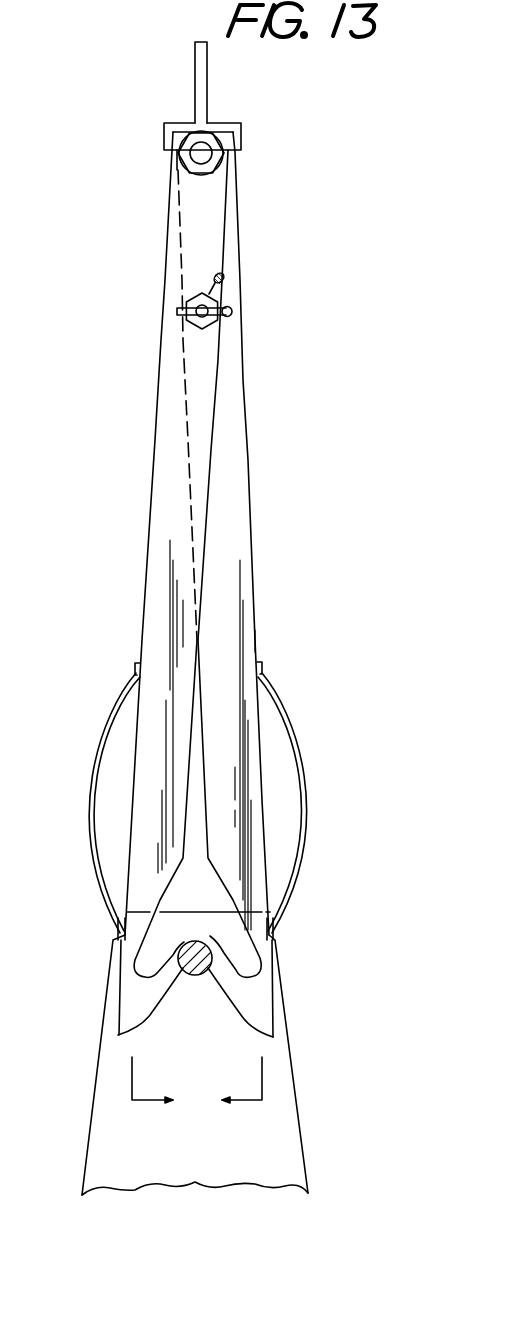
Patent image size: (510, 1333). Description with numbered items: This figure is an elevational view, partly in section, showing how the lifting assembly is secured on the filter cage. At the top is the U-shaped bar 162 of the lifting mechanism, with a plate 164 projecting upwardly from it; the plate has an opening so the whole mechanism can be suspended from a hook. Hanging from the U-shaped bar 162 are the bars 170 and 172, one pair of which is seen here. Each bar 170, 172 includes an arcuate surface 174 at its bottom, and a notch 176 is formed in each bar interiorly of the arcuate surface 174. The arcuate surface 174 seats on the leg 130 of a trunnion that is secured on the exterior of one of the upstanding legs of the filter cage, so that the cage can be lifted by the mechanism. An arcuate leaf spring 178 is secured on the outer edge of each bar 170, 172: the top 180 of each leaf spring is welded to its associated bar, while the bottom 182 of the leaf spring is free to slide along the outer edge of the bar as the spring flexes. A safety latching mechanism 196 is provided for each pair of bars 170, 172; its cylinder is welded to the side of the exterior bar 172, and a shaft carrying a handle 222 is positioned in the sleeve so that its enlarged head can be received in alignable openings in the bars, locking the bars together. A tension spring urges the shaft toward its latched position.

The leg 130 is at (198, 976).
The U-shaped bar 162 is at (243, 142).
The plate 164 is at (218, 73).
The bar 170 is at (247, 580).
The bar 172 is at (155, 512).
The arcuate surface 174 is at (237, 1008).
The notch 176 is at (148, 953).
The arcuate leaf spring 178 is at (91, 784).
The top of leaf spring 180 is at (135, 668).
The bottom of leaf spring 182 is at (118, 925).
The safety latching mechanism 196 is at (223, 273).
The handle 222 is at (177, 311).